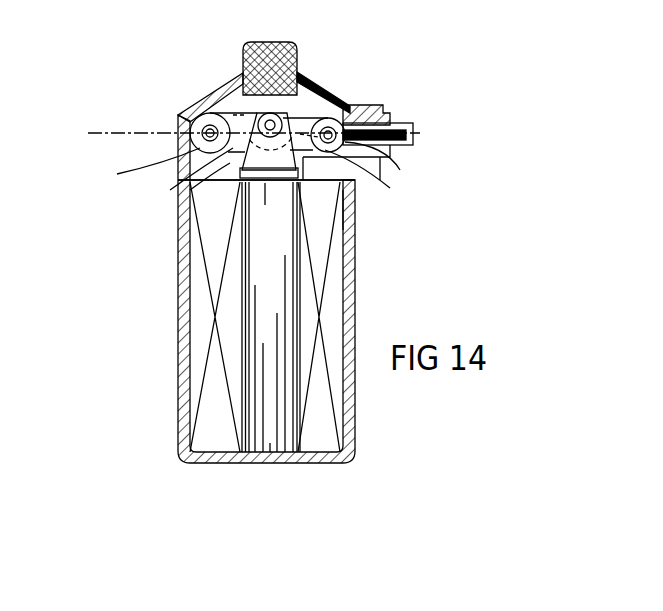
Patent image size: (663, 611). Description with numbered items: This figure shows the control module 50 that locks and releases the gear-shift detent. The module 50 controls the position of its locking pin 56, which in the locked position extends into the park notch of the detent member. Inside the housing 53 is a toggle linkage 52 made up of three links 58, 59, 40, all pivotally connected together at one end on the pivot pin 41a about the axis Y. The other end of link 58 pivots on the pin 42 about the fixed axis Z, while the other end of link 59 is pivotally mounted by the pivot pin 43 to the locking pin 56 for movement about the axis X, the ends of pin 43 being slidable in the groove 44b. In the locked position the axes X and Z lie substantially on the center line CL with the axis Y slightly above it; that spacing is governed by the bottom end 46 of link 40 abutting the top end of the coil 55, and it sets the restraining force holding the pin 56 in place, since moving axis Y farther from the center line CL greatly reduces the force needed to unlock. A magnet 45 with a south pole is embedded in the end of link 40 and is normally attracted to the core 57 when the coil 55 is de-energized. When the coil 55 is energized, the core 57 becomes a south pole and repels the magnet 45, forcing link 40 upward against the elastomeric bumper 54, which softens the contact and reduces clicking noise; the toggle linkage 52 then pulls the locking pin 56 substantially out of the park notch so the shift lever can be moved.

The center line CL is at (100, 132).
The module 50 is at (358, 259).
The housing 53 is at (180, 117).
The bumper 54 is at (287, 55).
The pivot pin 43 is at (345, 107).
The pin 56 is at (402, 127).
The toggle linkage 52 is at (222, 111).
The pin 42 is at (203, 132).
The axis X is at (370, 154).
The link 59 is at (375, 179).
The pivot pin 41a is at (262, 115).
The axis Y is at (273, 120).
The link 40 is at (246, 170).
The link 58 is at (178, 184).
The axis Z is at (166, 169).
The groove 44b is at (362, 202).
The coil 55 is at (215, 253).
The bottom end 46 is at (297, 183).
The magnet 45 is at (267, 183).
The core 57 is at (263, 307).